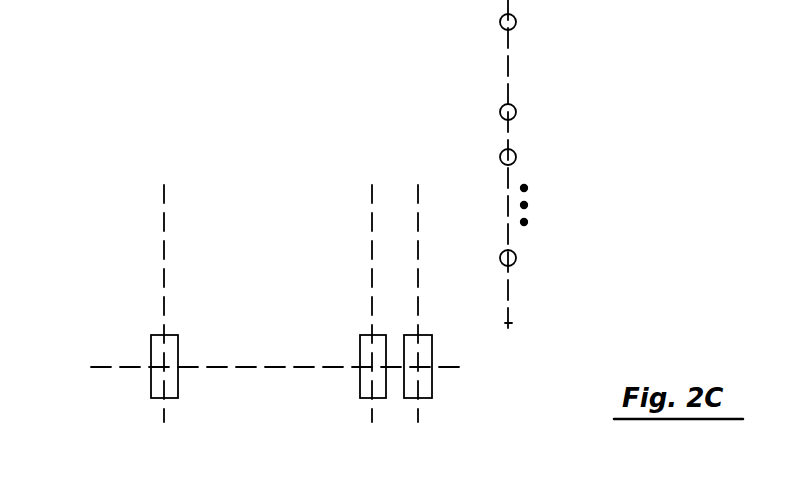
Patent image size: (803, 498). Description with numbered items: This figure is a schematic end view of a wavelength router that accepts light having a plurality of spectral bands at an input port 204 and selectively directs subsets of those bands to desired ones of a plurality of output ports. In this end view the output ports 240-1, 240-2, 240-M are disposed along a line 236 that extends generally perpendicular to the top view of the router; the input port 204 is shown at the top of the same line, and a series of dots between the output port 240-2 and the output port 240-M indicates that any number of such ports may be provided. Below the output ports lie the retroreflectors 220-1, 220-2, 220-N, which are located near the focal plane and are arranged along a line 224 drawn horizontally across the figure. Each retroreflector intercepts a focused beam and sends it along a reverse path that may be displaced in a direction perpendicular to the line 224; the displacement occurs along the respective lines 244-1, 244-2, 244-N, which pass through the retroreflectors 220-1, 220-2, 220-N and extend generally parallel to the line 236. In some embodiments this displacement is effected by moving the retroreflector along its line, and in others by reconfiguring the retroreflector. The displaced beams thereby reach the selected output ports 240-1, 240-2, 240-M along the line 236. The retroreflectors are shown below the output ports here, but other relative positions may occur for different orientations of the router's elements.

The input port 204 is at (516, 22).
The line 224 is at (104, 366).
The line 236 is at (512, 323).
The output port 240-1 is at (516, 112).
The output port 240-2 is at (516, 157).
The output port 240-M is at (516, 258).
The line 244-1 is at (420, 209).
The line 244-2 is at (370, 208).
The line 244-N is at (165, 203).
The retroreflector 220-1 is at (432, 396).
The retroreflector 220-2 is at (383, 398).
The retroreflector 220-N is at (172, 398).